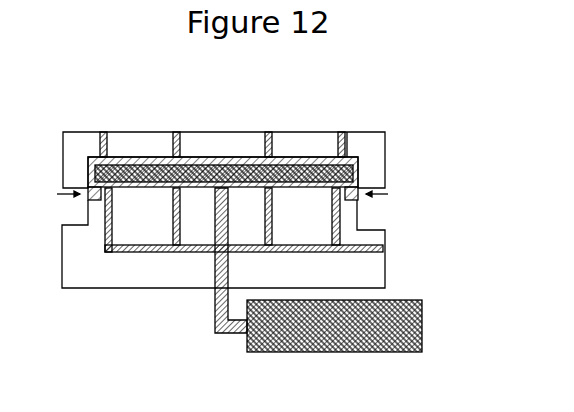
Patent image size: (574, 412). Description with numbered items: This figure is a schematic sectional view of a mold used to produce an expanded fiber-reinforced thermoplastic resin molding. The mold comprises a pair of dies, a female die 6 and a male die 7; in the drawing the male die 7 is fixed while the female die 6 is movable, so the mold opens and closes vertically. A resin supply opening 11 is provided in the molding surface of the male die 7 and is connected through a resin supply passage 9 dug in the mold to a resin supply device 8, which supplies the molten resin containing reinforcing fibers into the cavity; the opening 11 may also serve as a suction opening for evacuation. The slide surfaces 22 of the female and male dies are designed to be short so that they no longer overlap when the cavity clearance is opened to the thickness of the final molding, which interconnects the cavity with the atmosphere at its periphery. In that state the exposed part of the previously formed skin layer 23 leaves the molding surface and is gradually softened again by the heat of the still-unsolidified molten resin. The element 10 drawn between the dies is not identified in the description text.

The female die 6 is at (377, 165).
The male die 7 is at (370, 272).
The resin supply device 8 is at (422, 301).
The resin supply passage 9 is at (358, 222).
The substrate / heater plate 10 is at (242, 157).
The resin supply opening 11 is at (179, 155).
The slide surfaces 22 is at (228, 263).
The skin layer 23 is at (358, 180).